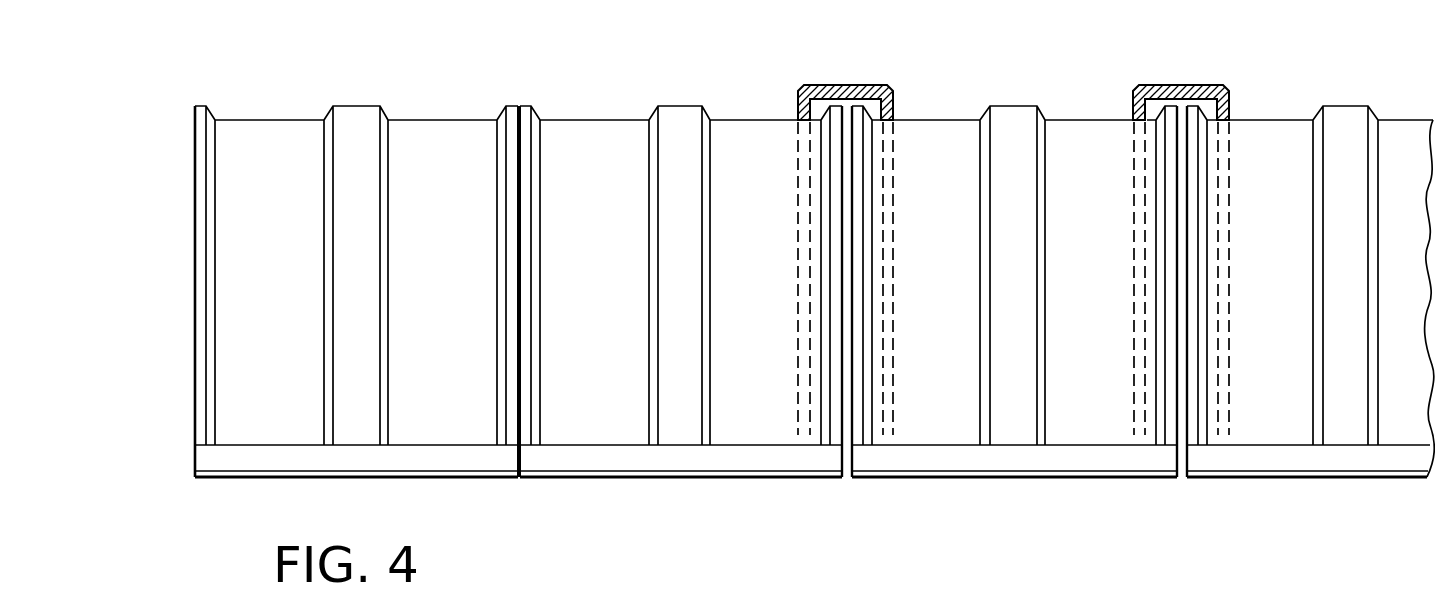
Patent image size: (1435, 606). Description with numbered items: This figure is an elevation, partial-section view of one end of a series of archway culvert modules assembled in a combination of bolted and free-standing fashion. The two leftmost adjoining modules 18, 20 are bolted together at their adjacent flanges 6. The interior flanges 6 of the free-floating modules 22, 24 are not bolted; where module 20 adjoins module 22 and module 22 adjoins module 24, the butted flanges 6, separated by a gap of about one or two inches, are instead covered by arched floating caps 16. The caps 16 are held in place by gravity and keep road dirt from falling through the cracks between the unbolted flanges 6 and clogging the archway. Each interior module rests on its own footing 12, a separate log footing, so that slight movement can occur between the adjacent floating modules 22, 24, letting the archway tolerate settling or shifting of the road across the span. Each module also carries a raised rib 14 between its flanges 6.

The flange 6 is at (199, 103).
The footing 12 is at (266, 468).
The rib 14 is at (361, 107).
The floating cap 16 is at (835, 83).
The module 18 is at (282, 119).
The module 20 is at (629, 114).
The free-floating module 22 is at (1067, 116).
The free-floating module 24 is at (1302, 116).